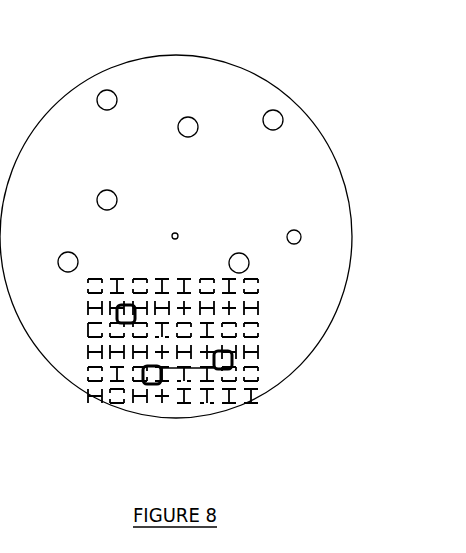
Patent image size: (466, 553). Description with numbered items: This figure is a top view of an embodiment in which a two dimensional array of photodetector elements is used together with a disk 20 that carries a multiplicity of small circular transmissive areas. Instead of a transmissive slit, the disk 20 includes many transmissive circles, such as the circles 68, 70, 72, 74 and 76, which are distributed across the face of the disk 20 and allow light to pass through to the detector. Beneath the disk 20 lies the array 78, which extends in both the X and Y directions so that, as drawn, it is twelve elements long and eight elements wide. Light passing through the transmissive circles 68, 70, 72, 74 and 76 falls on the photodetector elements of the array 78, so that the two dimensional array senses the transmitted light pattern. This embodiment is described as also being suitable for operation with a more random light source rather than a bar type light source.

The disk 20 is at (224, 70).
The transmissive circle 68 is at (116, 313).
The transmissive circle 70 is at (143, 370).
The transmissive circle 72 is at (234, 254).
The transmissive circle 74 is at (232, 350).
The transmissive circle 76 is at (188, 133).
The array 78 is at (212, 390).